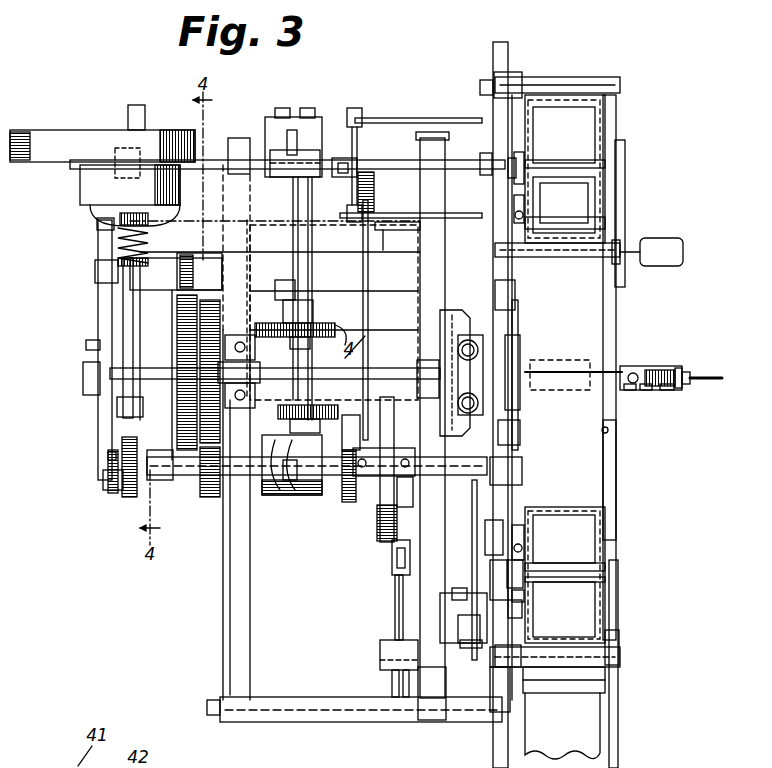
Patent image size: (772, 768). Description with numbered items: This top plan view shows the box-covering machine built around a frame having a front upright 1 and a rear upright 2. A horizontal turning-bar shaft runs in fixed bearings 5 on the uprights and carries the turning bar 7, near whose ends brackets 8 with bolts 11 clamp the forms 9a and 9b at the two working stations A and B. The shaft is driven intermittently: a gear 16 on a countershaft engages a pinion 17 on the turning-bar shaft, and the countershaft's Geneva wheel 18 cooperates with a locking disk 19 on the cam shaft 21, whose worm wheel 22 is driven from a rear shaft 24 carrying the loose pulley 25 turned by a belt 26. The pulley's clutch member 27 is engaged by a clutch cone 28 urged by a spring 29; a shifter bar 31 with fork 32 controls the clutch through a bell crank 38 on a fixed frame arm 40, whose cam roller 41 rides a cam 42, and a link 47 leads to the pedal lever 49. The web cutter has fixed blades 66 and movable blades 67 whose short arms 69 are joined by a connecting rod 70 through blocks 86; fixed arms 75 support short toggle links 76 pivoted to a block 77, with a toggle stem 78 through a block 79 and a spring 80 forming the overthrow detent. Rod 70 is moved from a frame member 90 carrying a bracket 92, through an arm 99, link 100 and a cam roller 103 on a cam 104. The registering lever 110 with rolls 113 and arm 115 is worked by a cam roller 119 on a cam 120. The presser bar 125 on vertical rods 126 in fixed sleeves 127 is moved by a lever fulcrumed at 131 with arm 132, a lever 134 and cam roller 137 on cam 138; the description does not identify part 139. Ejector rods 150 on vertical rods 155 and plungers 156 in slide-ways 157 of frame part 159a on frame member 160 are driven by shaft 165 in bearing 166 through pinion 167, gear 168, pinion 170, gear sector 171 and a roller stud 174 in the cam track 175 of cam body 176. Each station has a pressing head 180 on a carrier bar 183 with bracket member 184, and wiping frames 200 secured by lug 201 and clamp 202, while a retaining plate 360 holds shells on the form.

The front upright 1 is at (425, 604).
The rear upright 2 is at (224, 660).
The fixed bearings 5 is at (275, 379).
The turning bar 7 is at (520, 320).
The bracket 8 is at (536, 203).
The form 9a is at (588, 606).
The form 9b is at (585, 197).
The bolts 11 is at (546, 217).
The gear 16 is at (207, 421).
The pinion 17 is at (207, 369).
The Geneva wheel 18 is at (183, 427).
The locking disk 19 is at (185, 498).
The cam shaft 21 is at (322, 497).
The worm wheel 22 is at (115, 497).
The rear shaft 24 is at (128, 350).
The loose pulley 25 is at (78, 131).
The belt 26 is at (36, 145).
The clutch member 27 is at (82, 181).
The clutch cone 28 is at (95, 201).
The spring 29 is at (118, 243).
The shifter bar 31 is at (100, 340).
The fork 32 is at (118, 218).
The bell crank 38 is at (90, 376).
The fixed frame arm 40 is at (100, 413).
The cam roller 41 is at (110, 481).
The cam 42 is at (118, 492).
The link 47 is at (383, 252).
The pedal lever 49 is at (668, 251).
The fixed cutter blade 66 is at (546, 390).
The movable blade 67 is at (566, 370).
The short arms 69 is at (632, 365).
The connecting rod 70 is at (640, 365).
The fixed parallel arms 75 is at (667, 368).
The nut 76 is at (630, 386).
The block 77 is at (650, 387).
The toggle stem 78 is at (705, 377).
The block 79 is at (686, 371).
The spring 80 is at (668, 387).
The blocks 86 is at (652, 368).
The horizontal frame member 90 is at (617, 477).
The bracket 92 is at (619, 730).
The arm 99 is at (376, 210).
The link 100 is at (368, 311).
The cam roller 103 is at (390, 426).
The cam 104 is at (350, 503).
The registering lever 110 is at (452, 596).
The rolls 113 is at (516, 608).
The arm 115 is at (460, 629).
The cam roller 119 is at (518, 470).
The cam 120 is at (512, 429).
The presser bar 125 is at (502, 296).
The vertical rods 126 is at (512, 378).
The fixed sleeves 127 is at (470, 335).
The fulcrum 131 is at (380, 660).
The arm 132 is at (392, 685).
The lever 134 is at (402, 505).
The cam roller 137 is at (390, 542).
The cam 138 is at (385, 428).
The rod 139 is at (395, 626).
The ejector rods 150 is at (418, 120).
The vertical rods 155 is at (356, 166).
The horizontal bars 156 is at (223, 152).
The slide-ways 157 is at (315, 153).
The frame part 159a is at (265, 132).
The horizontal frame member 160 is at (305, 115).
The horizontal shaft 165 is at (294, 273).
The fixed bearing 166 is at (302, 300).
The pinion 167 is at (312, 326).
The gear 168 is at (350, 340).
The pinion 170 is at (310, 398).
The gear sector 171 is at (330, 398).
The roller stud 174 is at (247, 498).
The cam track 175 is at (283, 497).
The cam body 176 is at (266, 500).
The pressing head 180 is at (624, 173).
The carrier bar 183 is at (520, 160).
The bracket member 184 is at (522, 170).
The frame 200 is at (572, 82).
The lug 201 is at (513, 78).
The clamp 202 is at (480, 83).
The retaining plate 360 is at (608, 430).
The station A is at (618, 548).
The station B is at (612, 125).